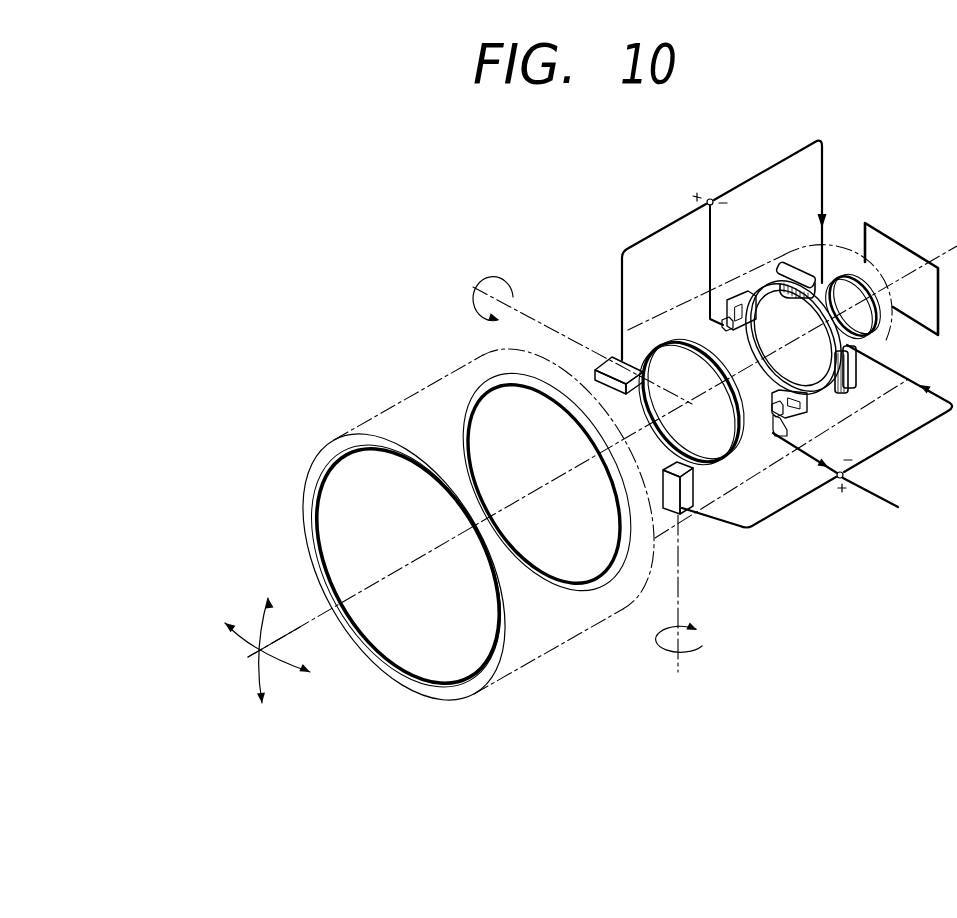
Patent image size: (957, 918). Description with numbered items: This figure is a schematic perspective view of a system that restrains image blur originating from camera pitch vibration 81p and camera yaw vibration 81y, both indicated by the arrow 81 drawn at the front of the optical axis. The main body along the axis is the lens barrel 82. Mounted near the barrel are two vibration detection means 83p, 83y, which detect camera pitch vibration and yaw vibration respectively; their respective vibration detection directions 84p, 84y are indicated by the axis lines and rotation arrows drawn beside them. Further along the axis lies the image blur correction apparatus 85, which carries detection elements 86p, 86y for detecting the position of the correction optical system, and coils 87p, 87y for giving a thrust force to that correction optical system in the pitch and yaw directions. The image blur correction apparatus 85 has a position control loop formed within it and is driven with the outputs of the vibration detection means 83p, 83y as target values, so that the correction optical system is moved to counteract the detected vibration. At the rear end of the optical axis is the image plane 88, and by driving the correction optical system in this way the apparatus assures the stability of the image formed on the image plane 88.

The arrow 81 is at (256, 653).
The camera pitch vibration 81p is at (258, 673).
The camera yaw vibration 81y is at (288, 673).
The lens barrel 82 is at (552, 652).
The vibration detection means 83p is at (618, 366).
The vibration detection means 83y is at (685, 490).
The vibration detection direction 84p is at (513, 297).
The vibration detection direction 84y is at (702, 647).
The image blur correction apparatus 85 is at (843, 218).
The detection element 86p is at (731, 300).
The detection element 86y is at (776, 436).
The coil 87p is at (796, 266).
The coil 87y is at (854, 376).
The image plane 88 is at (907, 248).